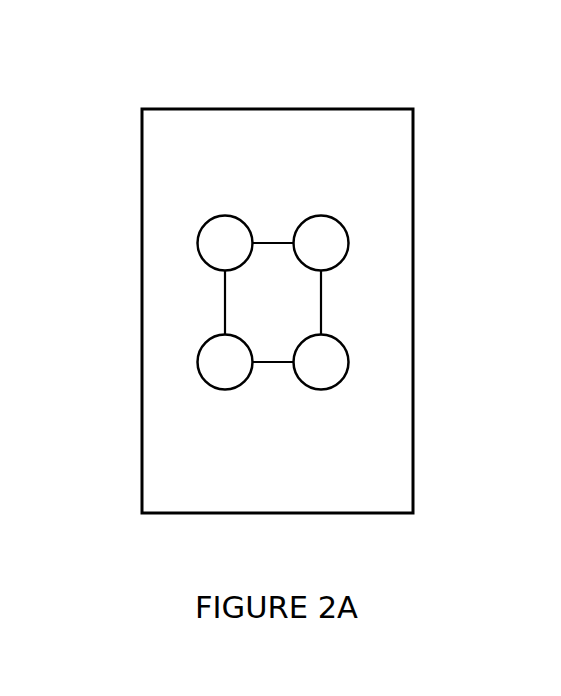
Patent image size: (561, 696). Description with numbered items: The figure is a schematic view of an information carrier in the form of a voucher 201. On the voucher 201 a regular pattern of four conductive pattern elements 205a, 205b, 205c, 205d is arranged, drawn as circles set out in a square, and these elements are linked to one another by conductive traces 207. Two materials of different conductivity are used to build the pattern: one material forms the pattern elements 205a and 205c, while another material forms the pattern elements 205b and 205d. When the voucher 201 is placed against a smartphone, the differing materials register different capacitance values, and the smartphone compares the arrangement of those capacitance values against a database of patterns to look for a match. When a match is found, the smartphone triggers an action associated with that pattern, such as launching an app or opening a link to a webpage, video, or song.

The voucher 201 is at (205, 105).
The conductive pattern element 205a is at (222, 246).
The conductive pattern element 205b is at (329, 240).
The conductive pattern element 205c is at (330, 363).
The conductive pattern element 205d is at (218, 363).
The conductive traces 207 is at (266, 361).